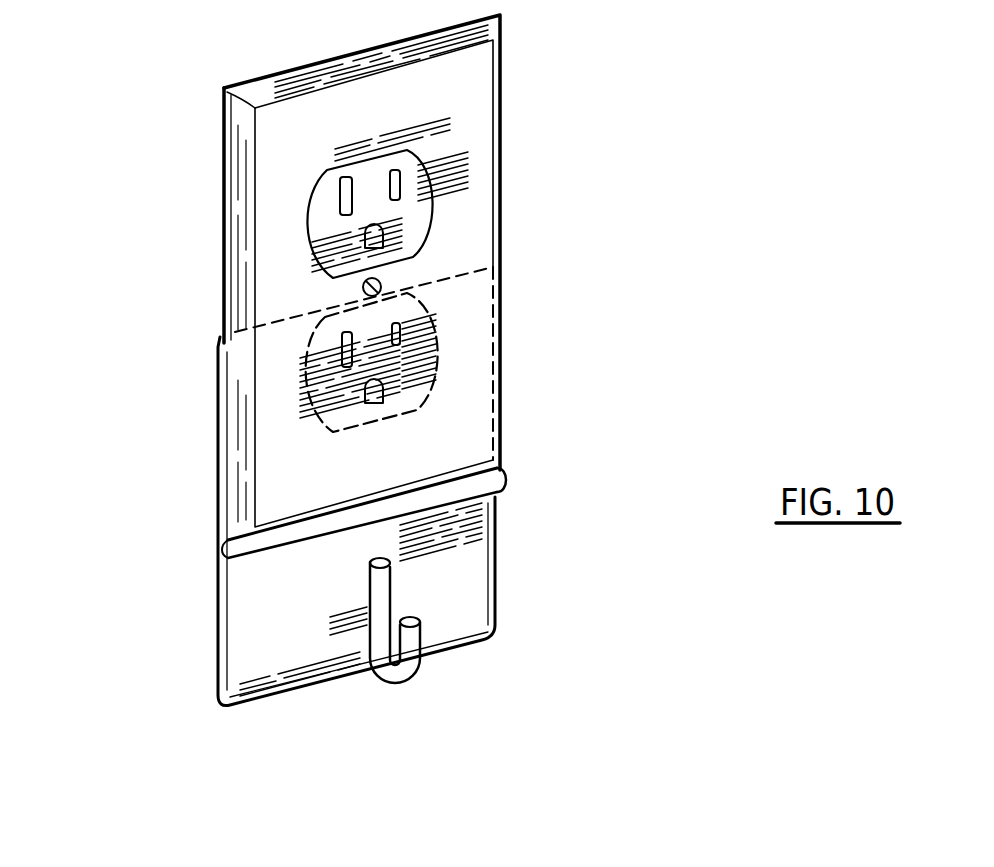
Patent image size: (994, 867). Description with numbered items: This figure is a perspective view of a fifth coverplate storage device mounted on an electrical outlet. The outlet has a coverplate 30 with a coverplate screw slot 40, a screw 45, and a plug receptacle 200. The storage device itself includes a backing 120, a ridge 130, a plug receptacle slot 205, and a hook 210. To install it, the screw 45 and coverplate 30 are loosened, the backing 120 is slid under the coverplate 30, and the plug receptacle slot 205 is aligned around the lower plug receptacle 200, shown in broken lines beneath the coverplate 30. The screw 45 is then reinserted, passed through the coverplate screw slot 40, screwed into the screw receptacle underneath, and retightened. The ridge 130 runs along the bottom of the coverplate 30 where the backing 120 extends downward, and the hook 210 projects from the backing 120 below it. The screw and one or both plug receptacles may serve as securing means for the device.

The coverplate 30 is at (463, 93).
The plug receptacle 200 is at (410, 222).
The coverplate screw slot 40 is at (382, 282).
The screw 45 is at (362, 288).
The plug receptacle slot 205 is at (433, 323).
The ridge 130 is at (499, 477).
The backing 120 is at (478, 573).
The hook 210 is at (415, 680).